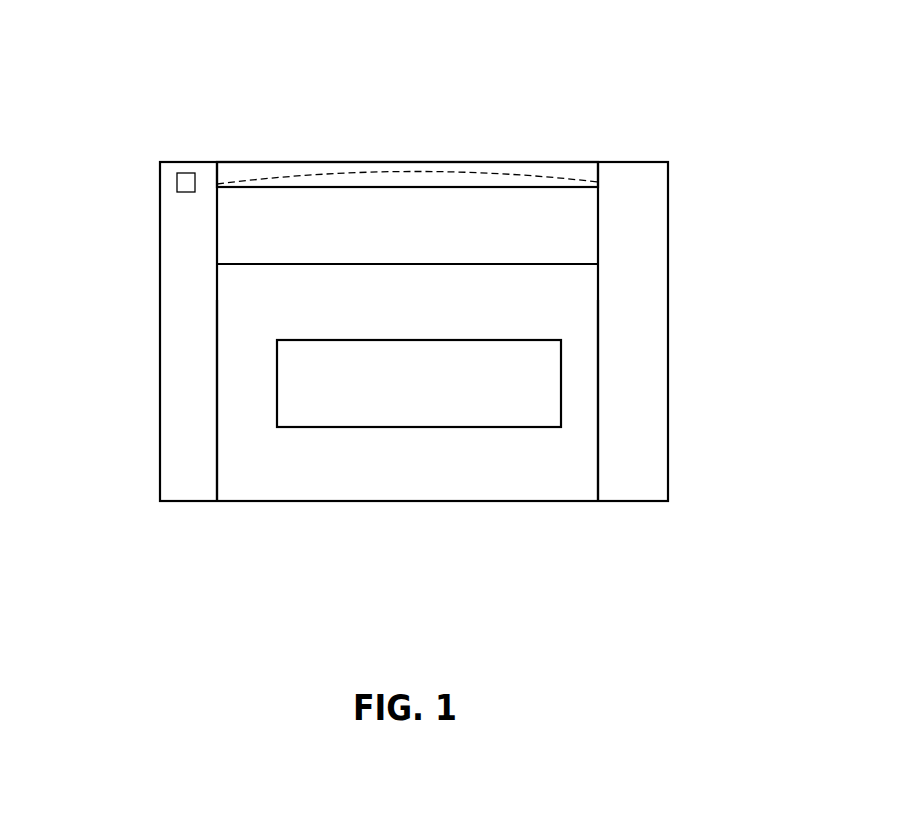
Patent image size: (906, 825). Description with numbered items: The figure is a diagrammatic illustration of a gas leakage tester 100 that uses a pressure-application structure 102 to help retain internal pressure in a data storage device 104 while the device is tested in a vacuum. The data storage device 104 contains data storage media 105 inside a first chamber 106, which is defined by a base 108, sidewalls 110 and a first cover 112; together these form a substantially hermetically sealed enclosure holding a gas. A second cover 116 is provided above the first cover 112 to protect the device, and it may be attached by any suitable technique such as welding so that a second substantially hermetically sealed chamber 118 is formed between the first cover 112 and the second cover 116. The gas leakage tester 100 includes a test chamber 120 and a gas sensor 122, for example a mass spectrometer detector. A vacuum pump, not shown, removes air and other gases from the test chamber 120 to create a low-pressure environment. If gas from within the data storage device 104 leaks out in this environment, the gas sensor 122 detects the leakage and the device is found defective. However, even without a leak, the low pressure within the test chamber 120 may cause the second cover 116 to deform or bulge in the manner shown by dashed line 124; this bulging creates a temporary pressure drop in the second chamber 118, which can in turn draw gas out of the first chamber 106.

The gas leakage tester 100 is at (144, 76).
The pressure-application structure 102 is at (512, 182).
The data storage device 104 is at (647, 320).
The data storage media 105 is at (503, 394).
The first chamber 106 is at (265, 456).
The base 108 is at (363, 501).
The sidewalls 110 is at (216, 408).
The first cover 112 is at (480, 263).
The second cover 116 is at (545, 188).
The second chamber 118 is at (248, 230).
The test chamber 120 is at (185, 350).
The gas sensor 122 is at (185, 182).
The dashed line 124 is at (328, 175).